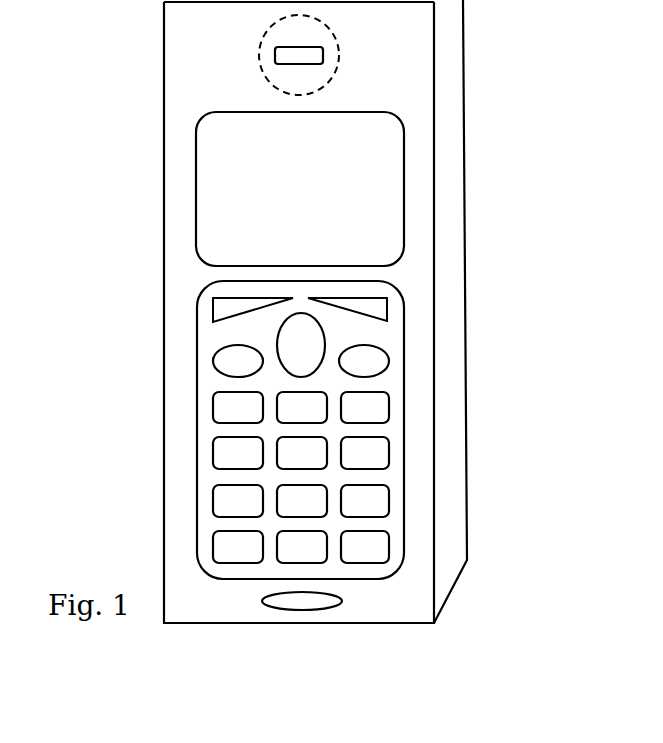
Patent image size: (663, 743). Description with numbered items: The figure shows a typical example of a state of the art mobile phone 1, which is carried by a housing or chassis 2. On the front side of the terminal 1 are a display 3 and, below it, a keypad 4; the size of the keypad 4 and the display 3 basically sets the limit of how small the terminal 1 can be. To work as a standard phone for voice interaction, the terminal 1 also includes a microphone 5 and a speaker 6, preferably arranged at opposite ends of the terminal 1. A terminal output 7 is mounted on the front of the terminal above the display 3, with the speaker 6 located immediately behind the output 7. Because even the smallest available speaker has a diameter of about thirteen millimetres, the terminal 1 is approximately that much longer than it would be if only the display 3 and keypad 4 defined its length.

The mobile phone 1 is at (313, 341).
The housing 2 is at (180, 110).
The display 3 is at (301, 199).
The keypad 4 is at (208, 342).
The microphone 5 is at (302, 610).
The speaker 6 is at (337, 68).
The terminal output 7 is at (275, 47).